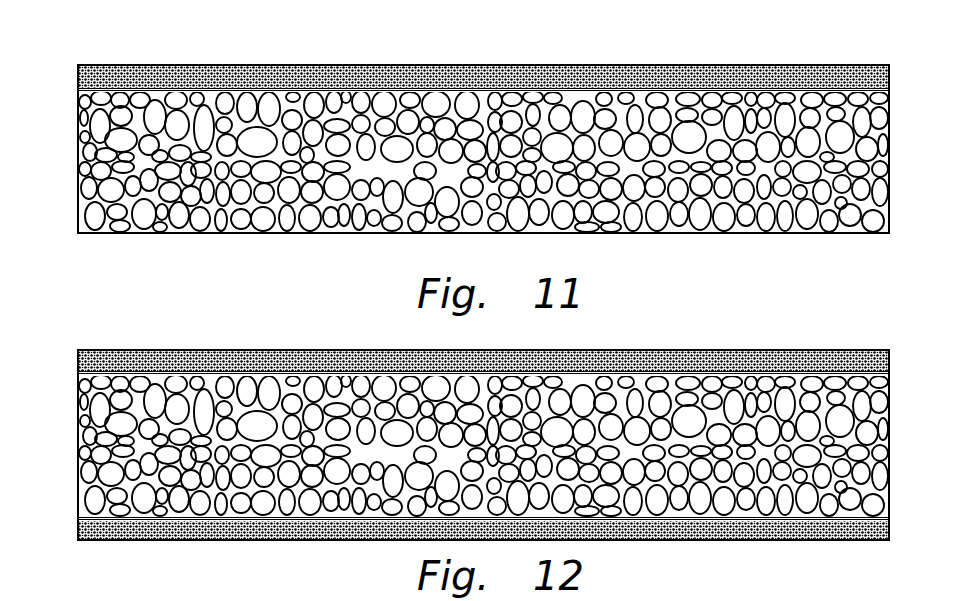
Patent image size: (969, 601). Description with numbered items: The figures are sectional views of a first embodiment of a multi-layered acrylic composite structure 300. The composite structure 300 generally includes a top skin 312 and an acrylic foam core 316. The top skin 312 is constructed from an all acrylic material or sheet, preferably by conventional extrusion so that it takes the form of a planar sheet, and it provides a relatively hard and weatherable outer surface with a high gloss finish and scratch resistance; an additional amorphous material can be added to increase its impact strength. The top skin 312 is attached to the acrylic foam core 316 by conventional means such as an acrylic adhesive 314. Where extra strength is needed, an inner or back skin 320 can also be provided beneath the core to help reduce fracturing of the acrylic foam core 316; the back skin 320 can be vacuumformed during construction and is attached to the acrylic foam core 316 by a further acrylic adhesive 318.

In FIG. 11, the composite structure 300 is at (127, 62).
In FIG. 12, the composite structure 300 is at (158, 347).
In FIG. 11, the top skin 312 is at (259, 65).
In FIG. 12, the top skin 312 is at (112, 350).
In FIG. 11, the acrylic adhesive 314 is at (77, 89).
In FIG. 12, the acrylic adhesive 314 is at (78, 372).
In FIG. 11, the acrylic foam core 316 is at (785, 234).
In FIG. 12, the acrylic foam core 316 is at (884, 506).
In FIG. 12, the acrylic adhesive 318 is at (75, 519).
In FIG. 12, the back skin 320 is at (785, 541).